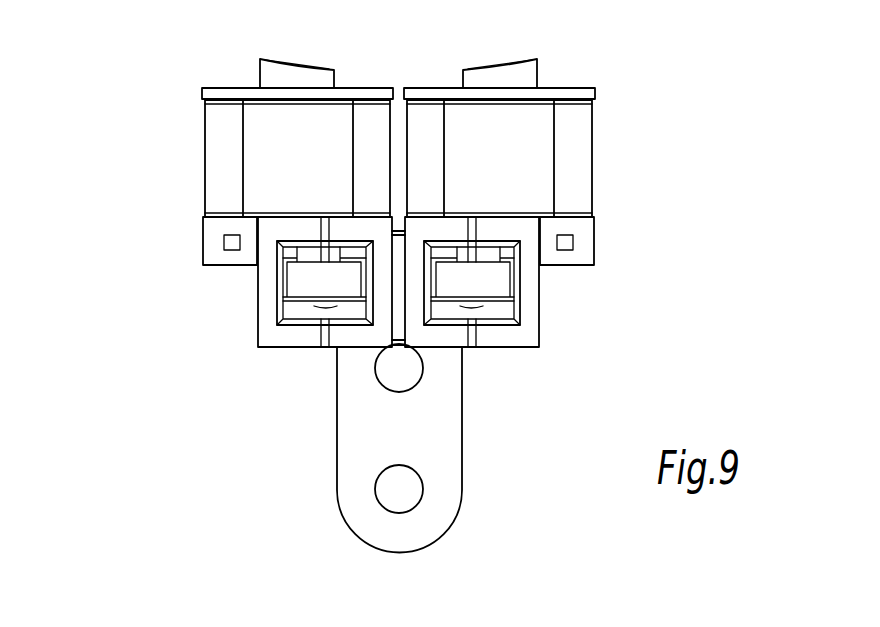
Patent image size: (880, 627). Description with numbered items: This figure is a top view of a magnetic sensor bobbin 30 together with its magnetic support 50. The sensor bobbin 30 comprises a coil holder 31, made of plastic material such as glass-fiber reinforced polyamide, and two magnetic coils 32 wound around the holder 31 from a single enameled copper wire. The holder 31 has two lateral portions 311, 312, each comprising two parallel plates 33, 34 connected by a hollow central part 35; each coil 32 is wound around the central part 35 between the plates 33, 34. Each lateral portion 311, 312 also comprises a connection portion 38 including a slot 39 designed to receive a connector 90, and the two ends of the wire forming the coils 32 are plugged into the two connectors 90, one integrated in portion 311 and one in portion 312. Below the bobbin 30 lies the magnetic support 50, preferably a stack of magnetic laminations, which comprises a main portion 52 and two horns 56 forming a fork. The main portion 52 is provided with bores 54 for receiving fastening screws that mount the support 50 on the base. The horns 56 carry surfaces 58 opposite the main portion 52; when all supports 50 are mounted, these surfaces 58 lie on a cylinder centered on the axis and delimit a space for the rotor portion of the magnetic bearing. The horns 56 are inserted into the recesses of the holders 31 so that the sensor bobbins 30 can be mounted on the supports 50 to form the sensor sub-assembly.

The sensor bobbin 30 is at (158, 77).
The coil holder 31 is at (712, 275).
The lateral portion 311 is at (606, 336).
The lateral portion 312 is at (190, 336).
The magnetic coil 32 is at (204, 180).
The plate 33 is at (210, 252).
The plate 34 is at (223, 93).
The hollow central part 35 is at (260, 155).
The connection portion 38 is at (308, 338).
The slot 39 is at (288, 283).
The magnetic support 50 is at (338, 569).
The main portion 52 is at (425, 452).
The bore 54 is at (396, 367).
The horn 56 is at (282, 73).
The surface 58 is at (312, 61).
The connector 90 is at (287, 299).